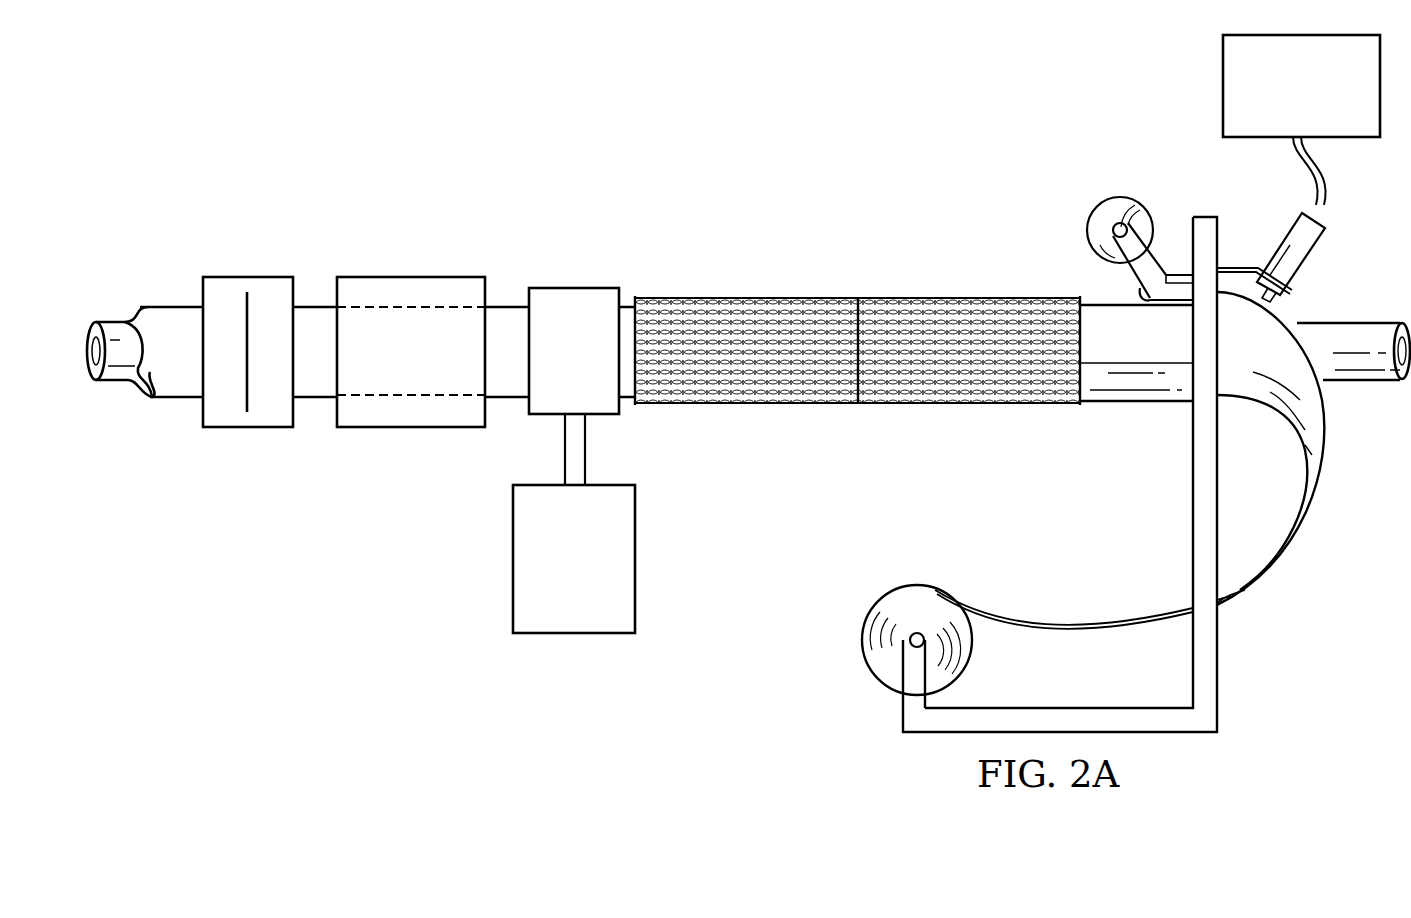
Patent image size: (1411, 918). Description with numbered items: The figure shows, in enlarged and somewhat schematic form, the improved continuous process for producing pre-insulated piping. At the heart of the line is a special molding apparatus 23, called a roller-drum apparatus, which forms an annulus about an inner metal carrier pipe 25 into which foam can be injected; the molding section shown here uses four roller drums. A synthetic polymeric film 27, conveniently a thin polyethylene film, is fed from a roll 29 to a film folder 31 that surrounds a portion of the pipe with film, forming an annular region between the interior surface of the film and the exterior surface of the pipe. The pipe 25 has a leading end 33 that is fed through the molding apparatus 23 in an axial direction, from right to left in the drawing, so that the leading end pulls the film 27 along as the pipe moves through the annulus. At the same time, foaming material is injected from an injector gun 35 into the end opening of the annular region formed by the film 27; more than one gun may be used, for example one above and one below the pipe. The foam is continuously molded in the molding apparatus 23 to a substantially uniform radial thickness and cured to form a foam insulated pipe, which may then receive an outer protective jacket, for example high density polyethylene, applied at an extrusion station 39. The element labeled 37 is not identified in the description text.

The molding apparatus 23 is at (992, 272).
The inner metal carrier pipe 25 is at (1352, 323).
The synthetic polymeric film 27 is at (1100, 628).
The roll 29 is at (870, 676).
The film folder 31 is at (1336, 420).
The leading end 33 is at (108, 322).
The injector gun 35 is at (1283, 243).
The cutter unit 37 is at (236, 277).
The extrusion station 39 is at (574, 288).